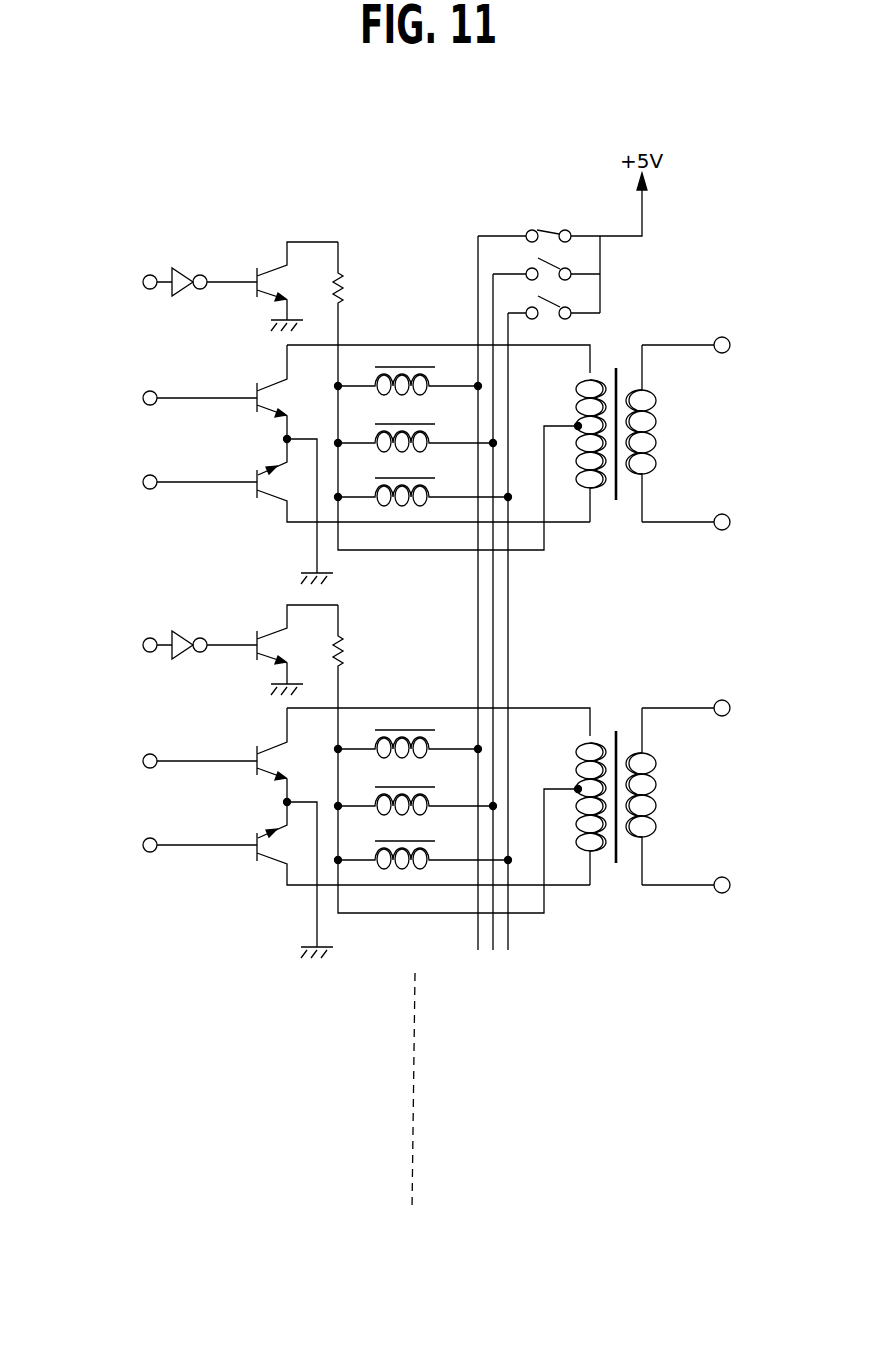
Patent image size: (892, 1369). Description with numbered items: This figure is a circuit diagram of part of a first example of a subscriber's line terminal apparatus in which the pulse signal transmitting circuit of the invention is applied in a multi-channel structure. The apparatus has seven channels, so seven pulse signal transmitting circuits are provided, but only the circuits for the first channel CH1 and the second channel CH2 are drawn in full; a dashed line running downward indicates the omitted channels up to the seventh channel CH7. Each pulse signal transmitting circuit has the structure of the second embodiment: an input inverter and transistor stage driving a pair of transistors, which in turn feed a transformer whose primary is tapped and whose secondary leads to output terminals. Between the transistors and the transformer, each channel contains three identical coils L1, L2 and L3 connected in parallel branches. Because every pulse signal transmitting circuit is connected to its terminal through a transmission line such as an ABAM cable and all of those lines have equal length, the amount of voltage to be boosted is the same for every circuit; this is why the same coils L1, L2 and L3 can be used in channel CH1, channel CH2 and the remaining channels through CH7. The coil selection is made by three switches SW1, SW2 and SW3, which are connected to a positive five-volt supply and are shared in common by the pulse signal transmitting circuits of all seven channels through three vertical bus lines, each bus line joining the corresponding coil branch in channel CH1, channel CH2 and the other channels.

The coil L1 is at (408, 558).
The coil L2 is at (416, 615).
The coil L3 is at (423, 669).
The switch SW1 is at (535, 223).
The switch SW2 is at (546, 264).
The switch SW3 is at (554, 303).
The channel CH1 is at (436, 413).
The channel CH2 is at (436, 781).
The channel CH7 is at (417, 1121).